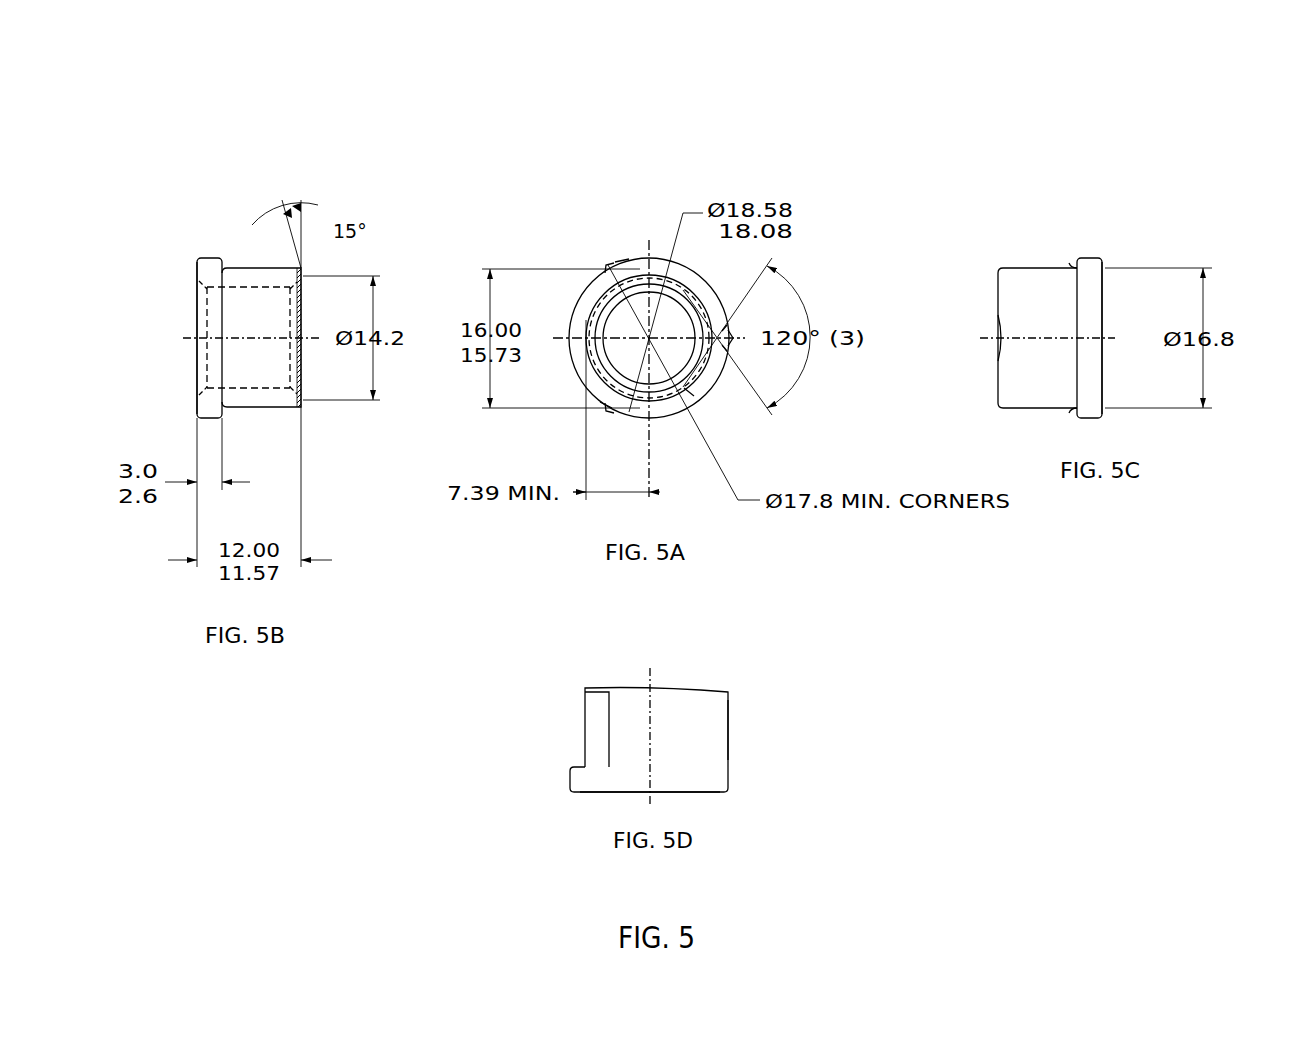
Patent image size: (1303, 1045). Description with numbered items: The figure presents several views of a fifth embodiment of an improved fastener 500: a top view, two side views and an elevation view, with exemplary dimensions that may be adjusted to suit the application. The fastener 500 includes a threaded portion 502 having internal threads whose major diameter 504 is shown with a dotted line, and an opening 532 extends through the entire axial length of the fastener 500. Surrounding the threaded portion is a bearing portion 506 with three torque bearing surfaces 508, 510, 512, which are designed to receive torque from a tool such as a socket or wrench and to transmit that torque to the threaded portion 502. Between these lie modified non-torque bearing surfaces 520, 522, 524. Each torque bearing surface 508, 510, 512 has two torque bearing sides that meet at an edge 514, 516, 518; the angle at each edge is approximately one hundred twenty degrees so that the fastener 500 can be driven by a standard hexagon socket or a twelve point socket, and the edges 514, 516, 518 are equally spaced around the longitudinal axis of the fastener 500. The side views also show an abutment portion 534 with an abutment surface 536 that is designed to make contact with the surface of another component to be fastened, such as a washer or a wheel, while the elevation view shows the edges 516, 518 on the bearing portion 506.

In FIG. 5, the fastener 500 is at (178, 100).
In FIG. 5B, the threaded portion 502 is at (258, 383).
In FIG. 5B, the major diameter 504 is at (243, 389).
In FIG. 5B, the bearing portion 506 is at (247, 263).
In FIG. 5C, the bearing portion 506 is at (1027, 265).
In FIG. 5D, the bearing portion 506 is at (705, 710).
In FIG. 5A, the torque bearing surface 508 is at (607, 281).
In FIG. 5A, the torque bearing surface 510 is at (722, 323).
In FIG. 5A, the torque bearing surface 512 is at (622, 413).
In FIG. 5A, the edge 514 is at (622, 261).
In FIG. 5A, the edge 516 is at (730, 338).
In FIG. 5C, the edge 516 is at (1027, 333).
In FIG. 5D, the edge 516 is at (733, 722).
In FIG. 5A, the edge 518 is at (610, 410).
In FIG. 5D, the edge 518 is at (583, 723).
In FIG. 5A, the non-torque bearing surface 520 is at (687, 280).
In FIG. 5A, the non-torque bearing surface 522 is at (690, 393).
In FIG. 5A, the non-torque bearing surface 524 is at (585, 327).
In FIG. 5B, the opening 532 is at (237, 328).
In FIG. 5B, the abutment portion 534 is at (208, 255).
In FIG. 5C, the abutment portion 534 is at (1105, 282).
In FIG. 5D, the abutment portion 534 is at (730, 778).
In FIG. 5B, the abutment surface 536 is at (190, 277).
In FIG. 5C, the abutment surface 536 is at (1090, 255).
In FIG. 5D, the abutment surface 536 is at (700, 794).